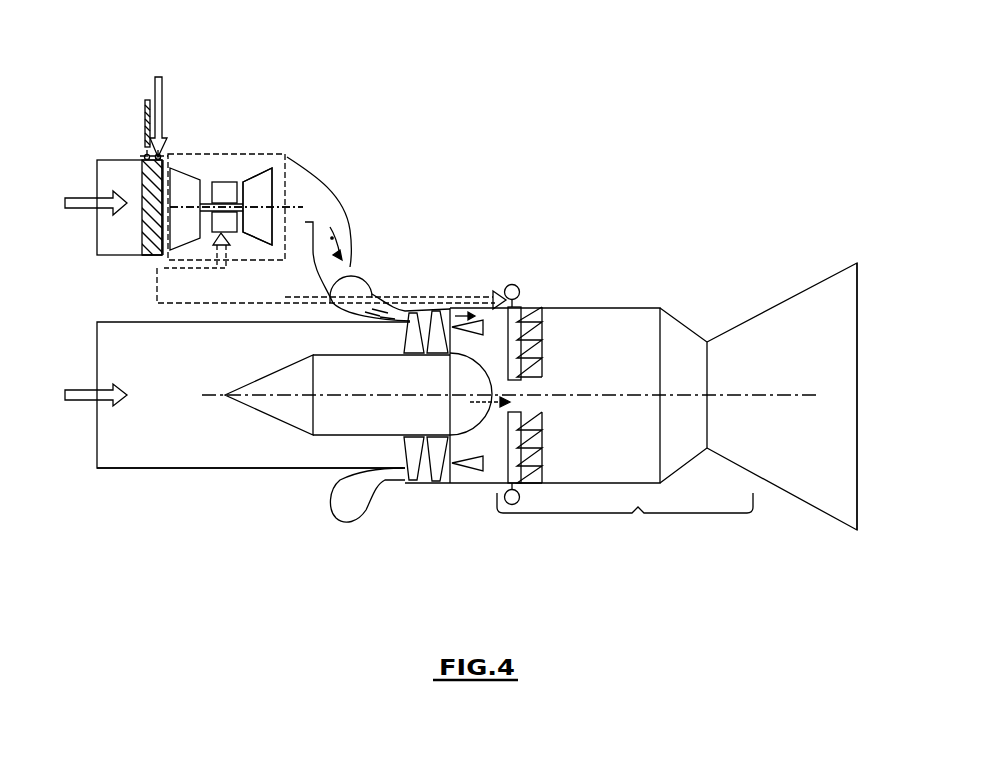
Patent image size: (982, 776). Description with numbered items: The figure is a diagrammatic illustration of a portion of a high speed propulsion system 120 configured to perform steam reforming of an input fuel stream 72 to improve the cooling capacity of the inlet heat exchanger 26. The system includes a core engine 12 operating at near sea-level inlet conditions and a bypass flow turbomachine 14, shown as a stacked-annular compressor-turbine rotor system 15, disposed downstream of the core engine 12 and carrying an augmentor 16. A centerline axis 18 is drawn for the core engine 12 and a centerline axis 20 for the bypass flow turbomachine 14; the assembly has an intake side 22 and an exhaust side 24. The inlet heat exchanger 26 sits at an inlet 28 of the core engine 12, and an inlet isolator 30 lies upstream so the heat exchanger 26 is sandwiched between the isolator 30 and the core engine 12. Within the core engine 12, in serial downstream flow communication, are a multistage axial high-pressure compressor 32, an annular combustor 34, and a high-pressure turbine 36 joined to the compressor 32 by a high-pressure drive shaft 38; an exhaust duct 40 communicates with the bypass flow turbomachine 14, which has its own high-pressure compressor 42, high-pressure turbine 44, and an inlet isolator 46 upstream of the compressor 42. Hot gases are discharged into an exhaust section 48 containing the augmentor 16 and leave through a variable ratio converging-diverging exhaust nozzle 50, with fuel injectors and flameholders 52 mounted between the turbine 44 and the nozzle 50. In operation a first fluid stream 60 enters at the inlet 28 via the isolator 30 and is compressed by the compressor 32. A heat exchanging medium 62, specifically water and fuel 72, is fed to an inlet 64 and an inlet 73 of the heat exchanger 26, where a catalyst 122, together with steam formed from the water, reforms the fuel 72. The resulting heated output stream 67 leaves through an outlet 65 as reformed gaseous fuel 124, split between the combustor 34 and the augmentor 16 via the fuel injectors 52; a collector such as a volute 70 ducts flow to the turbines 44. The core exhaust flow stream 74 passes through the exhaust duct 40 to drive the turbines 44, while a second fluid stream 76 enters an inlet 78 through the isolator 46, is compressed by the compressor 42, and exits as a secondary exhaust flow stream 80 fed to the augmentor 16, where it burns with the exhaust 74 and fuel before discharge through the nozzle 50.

The core engine 12 is at (287, 156).
The bypass flow turbomachine 14 is at (584, 240).
The stacked-annular compressor-turbine rotor system 15 is at (435, 265).
The augmentor 16 is at (625, 523).
The centerline axis of the core engine 18 is at (296, 205).
The centerline axis of the bypass flow turbomachine 20 is at (766, 393).
The intake side 22 is at (32, 320).
The exhaust side 24 is at (858, 352).
The inlet heat exchanger 26 is at (142, 233).
The inlet 28 is at (75, 150).
The inlet isolator 30 is at (100, 160).
The multistage axial high-pressure compressor 32 is at (190, 177).
The annular combustor 34 is at (230, 180).
The high-pressure turbine 36 is at (253, 172).
The high-pressure drive shaft 38 is at (212, 181).
The exhaust duct 40 is at (350, 230).
The high-pressure compressor 42 is at (408, 480).
The high-pressure turbine 44 is at (437, 308).
The inlet isolator 46 is at (227, 470).
The exhaust section 48 is at (649, 288).
The variable ratio converging-diverging exhaust nozzle 50 is at (783, 302).
The fuel injectors and flameholders 52 is at (517, 478).
The first fluid stream 60 is at (80, 206).
The heat exchanging medium 62 is at (143, 120).
The inlet 64 is at (140, 152).
The outlet 65 is at (155, 253).
The heated output stream 67 is at (140, 288).
The collector 70 is at (362, 278).
The input fuel stream 72 is at (157, 77).
The inlet 73 is at (167, 152).
The exhaust flow stream 74 is at (320, 258).
The second fluid stream 76 is at (82, 400).
The inlet 78 is at (71, 444).
The secondary exhaust flow stream 80 is at (478, 407).
The high speed propulsion system 120 is at (762, 164).
The catalyst 122 is at (153, 253).
The reformed gaseous fuel 124 is at (172, 303).